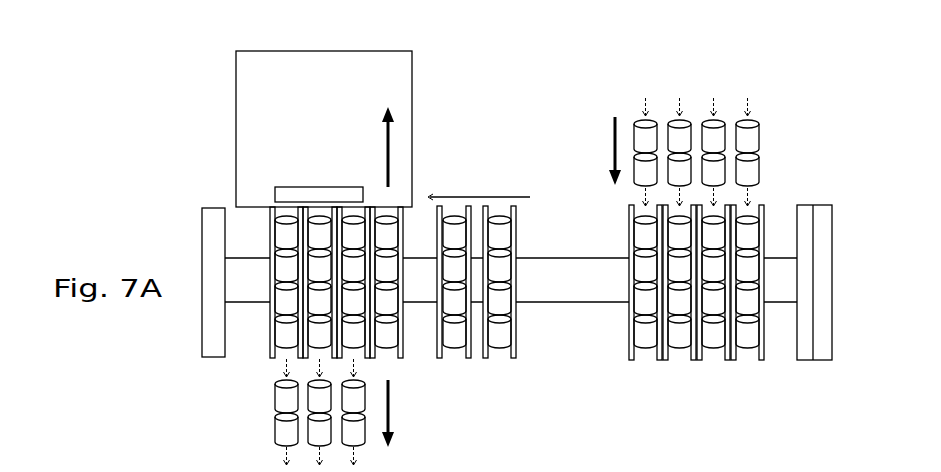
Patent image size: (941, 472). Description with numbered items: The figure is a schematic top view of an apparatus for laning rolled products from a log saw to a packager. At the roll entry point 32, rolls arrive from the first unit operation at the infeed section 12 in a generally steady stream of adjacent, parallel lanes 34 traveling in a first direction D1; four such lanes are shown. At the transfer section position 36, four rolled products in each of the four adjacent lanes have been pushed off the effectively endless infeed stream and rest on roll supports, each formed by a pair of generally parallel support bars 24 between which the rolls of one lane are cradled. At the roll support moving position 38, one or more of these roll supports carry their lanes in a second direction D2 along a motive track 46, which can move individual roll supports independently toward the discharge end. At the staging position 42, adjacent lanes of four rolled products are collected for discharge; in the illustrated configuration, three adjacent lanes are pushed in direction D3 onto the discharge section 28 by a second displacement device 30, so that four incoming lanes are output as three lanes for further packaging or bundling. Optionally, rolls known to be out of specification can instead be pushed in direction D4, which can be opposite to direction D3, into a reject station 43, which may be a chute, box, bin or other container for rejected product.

The infeed section 12 is at (762, 128).
The support bars 24 is at (758, 360).
The discharge section 28 is at (262, 413).
The second displacement device 30 is at (297, 183).
The roll entry point 32 is at (757, 95).
The lanes 34 is at (748, 175).
The transfer section position 36 is at (768, 294).
The roll support moving position 38 is at (502, 175).
The staging position 42 is at (323, 168).
The reject station 43 is at (236, 73).
The motive track 46 is at (593, 285).
The first direction D1 is at (613, 147).
The second direction D2 is at (467, 195).
The third direction D3 is at (392, 415).
The fourth direction D4 is at (390, 137).